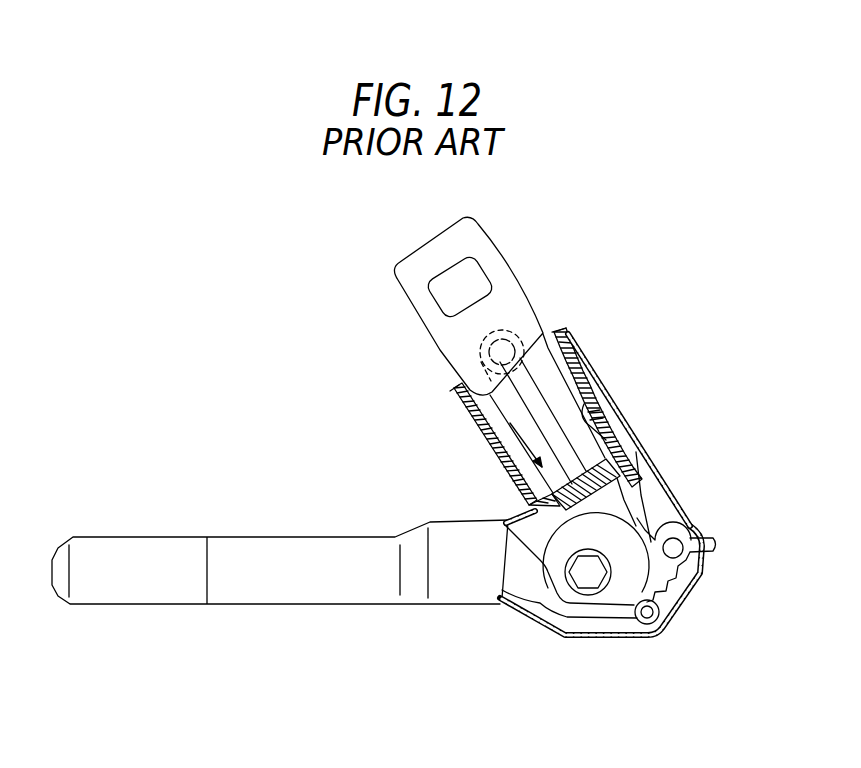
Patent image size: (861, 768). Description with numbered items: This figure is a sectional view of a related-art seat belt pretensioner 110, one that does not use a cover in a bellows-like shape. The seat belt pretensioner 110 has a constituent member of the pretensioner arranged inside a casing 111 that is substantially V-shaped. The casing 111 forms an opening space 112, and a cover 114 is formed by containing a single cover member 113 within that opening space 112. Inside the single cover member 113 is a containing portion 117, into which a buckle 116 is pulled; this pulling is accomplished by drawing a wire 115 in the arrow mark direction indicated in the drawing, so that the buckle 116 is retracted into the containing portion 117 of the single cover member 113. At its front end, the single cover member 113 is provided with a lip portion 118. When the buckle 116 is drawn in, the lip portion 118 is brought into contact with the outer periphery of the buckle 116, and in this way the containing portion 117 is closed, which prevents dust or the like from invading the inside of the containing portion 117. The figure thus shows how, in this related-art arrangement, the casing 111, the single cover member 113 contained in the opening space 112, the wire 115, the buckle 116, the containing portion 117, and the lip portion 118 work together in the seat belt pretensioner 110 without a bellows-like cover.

The seat belt pretensioner 110 is at (688, 455).
The casing 111 is at (467, 590).
The opening space 112 is at (600, 393).
The single cover member 113 is at (580, 387).
The cover 114 is at (570, 330).
The wire 115 is at (512, 403).
The buckle 116 is at (404, 290).
The containing portion 117 is at (490, 453).
The lip portion 118 is at (545, 327).